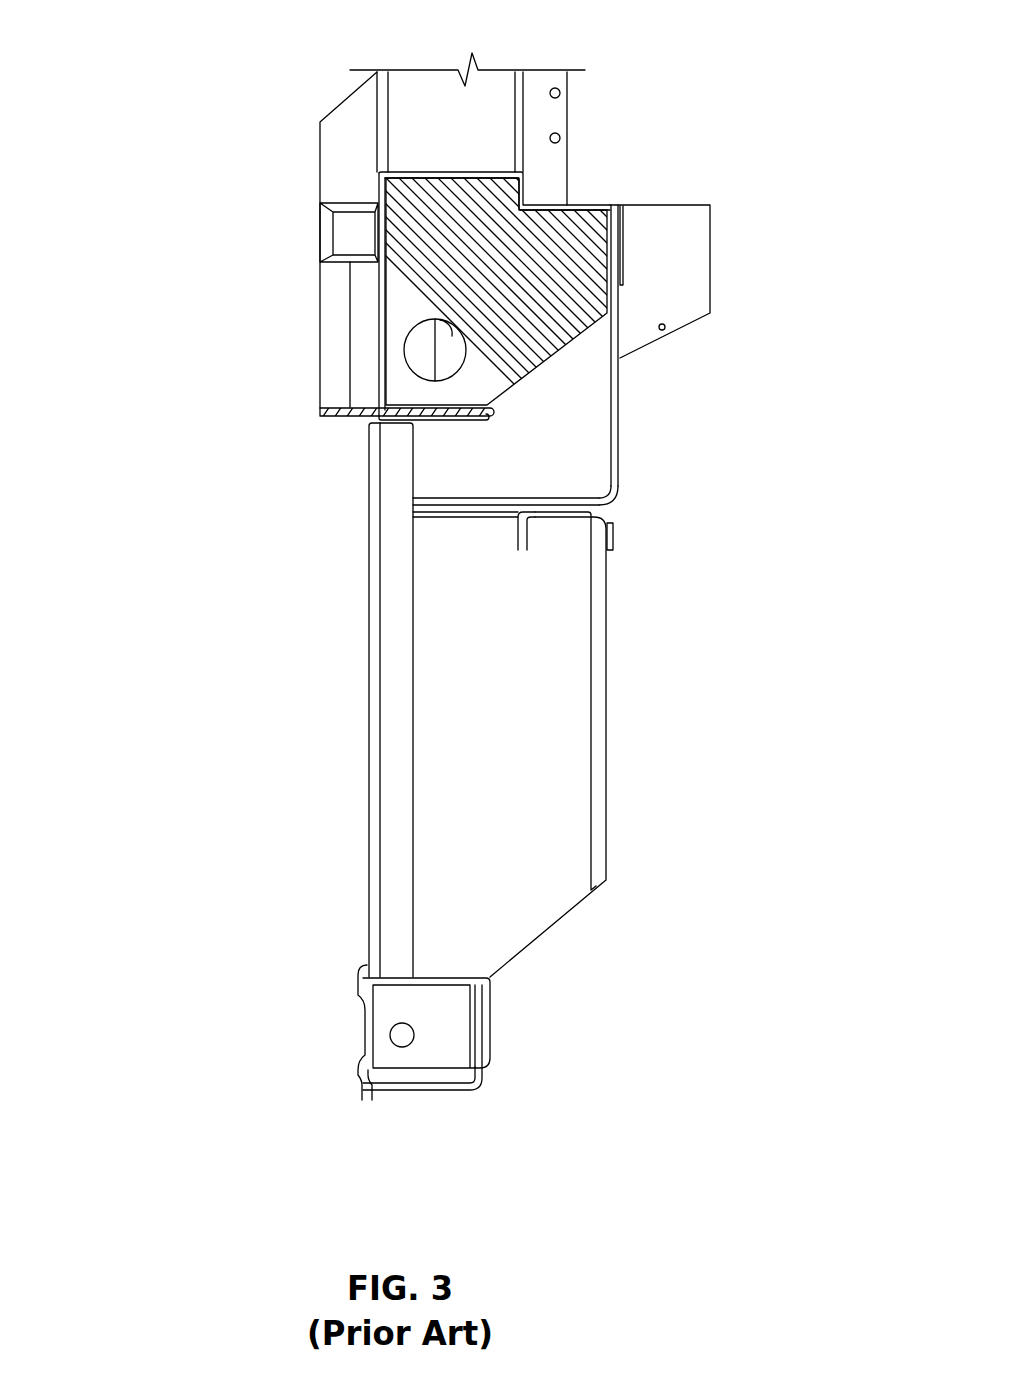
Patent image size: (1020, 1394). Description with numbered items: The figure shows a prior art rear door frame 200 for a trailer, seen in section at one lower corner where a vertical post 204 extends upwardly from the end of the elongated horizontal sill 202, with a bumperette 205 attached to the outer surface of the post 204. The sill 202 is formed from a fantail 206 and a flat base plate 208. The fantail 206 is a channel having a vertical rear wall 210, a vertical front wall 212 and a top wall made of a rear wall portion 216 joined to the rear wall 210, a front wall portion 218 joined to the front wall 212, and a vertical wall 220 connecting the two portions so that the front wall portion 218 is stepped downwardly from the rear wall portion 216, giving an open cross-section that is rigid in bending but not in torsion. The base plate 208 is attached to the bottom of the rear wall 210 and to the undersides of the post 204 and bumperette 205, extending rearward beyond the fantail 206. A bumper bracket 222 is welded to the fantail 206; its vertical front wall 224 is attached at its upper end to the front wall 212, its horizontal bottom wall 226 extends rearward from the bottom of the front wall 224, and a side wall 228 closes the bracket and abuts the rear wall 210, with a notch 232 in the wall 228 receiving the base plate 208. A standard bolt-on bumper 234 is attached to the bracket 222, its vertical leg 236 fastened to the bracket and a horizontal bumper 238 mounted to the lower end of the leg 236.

The rear door frame 200 is at (203, 283).
The sill 202 is at (362, 240).
The vertical post 204 is at (425, 98).
The bumperette 205 is at (330, 152).
The fantail 206 is at (362, 337).
The base plate 208 is at (330, 420).
The rear wall 210 is at (382, 390).
The front wall 212 is at (625, 250).
The rear wall portion 216 is at (452, 170).
The front wall portion 218 is at (593, 205).
The vertical wall 220 is at (528, 205).
The bumper bracket 222 is at (625, 428).
The front wall 224 is at (620, 387).
The bottom wall 226 is at (460, 503).
The wall 228 is at (433, 467).
The notch 232 is at (467, 412).
The bolt-on bumper 234 is at (368, 867).
The vertical leg 236 is at (428, 700).
The horizontal bumper 238 is at (492, 1028).